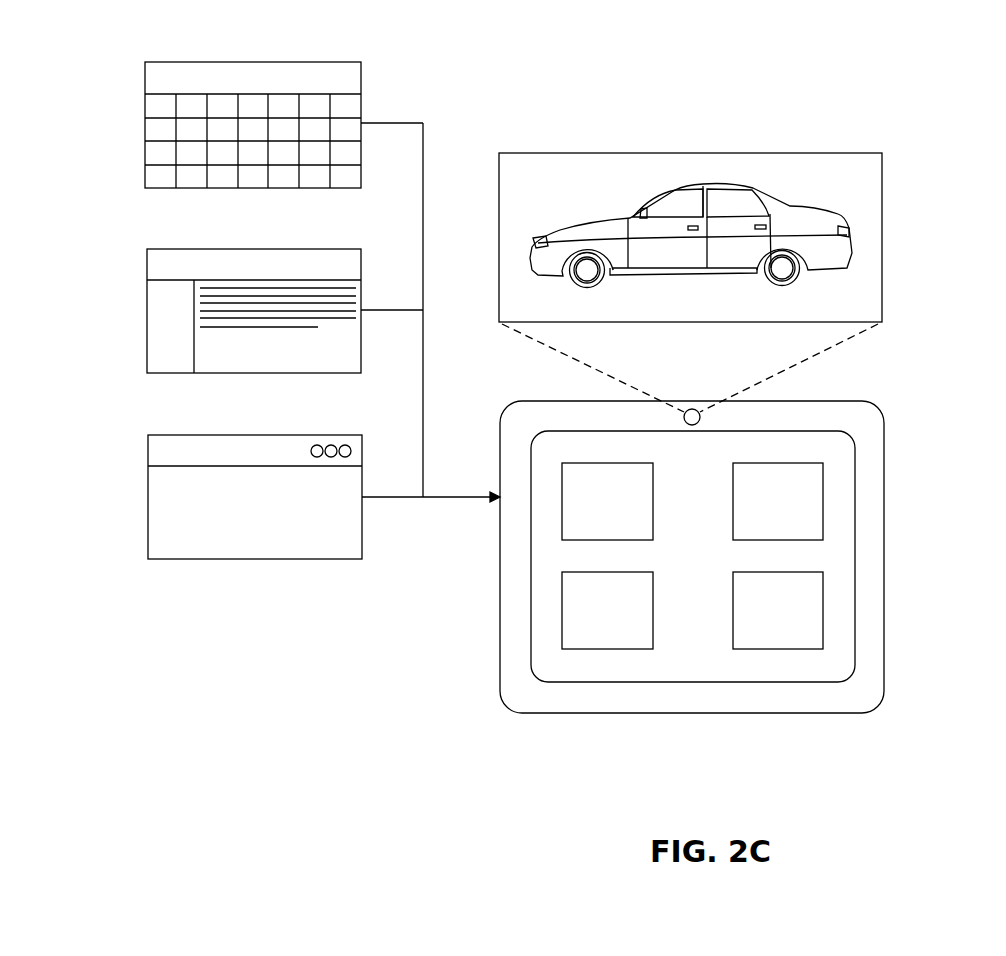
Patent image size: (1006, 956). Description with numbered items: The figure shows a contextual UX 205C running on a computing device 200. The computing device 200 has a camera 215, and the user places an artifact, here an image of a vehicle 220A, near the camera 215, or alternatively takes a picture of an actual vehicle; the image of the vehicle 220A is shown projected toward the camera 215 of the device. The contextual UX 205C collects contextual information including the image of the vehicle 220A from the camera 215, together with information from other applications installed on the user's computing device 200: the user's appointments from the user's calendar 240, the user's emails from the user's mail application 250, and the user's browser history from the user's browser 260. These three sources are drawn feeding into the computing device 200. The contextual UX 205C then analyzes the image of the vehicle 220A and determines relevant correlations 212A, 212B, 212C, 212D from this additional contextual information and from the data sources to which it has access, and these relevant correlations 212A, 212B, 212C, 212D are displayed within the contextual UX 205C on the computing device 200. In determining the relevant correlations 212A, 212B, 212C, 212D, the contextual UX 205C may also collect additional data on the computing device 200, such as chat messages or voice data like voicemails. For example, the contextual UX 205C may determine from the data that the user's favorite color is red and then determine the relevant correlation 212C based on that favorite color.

The computing device 200 is at (920, 456).
The contextual UX 205C is at (693, 556).
The relevant correlation 212A is at (607, 501).
The relevant correlation 212B is at (607, 610).
The relevant correlation 212C is at (778, 501).
The relevant correlation 212D is at (778, 610).
The camera 215 is at (693, 398).
The image of a vehicle 220A is at (743, 150).
The calendar 240 is at (289, 58).
The mail application 250 is at (257, 245).
The browser 260 is at (235, 431).